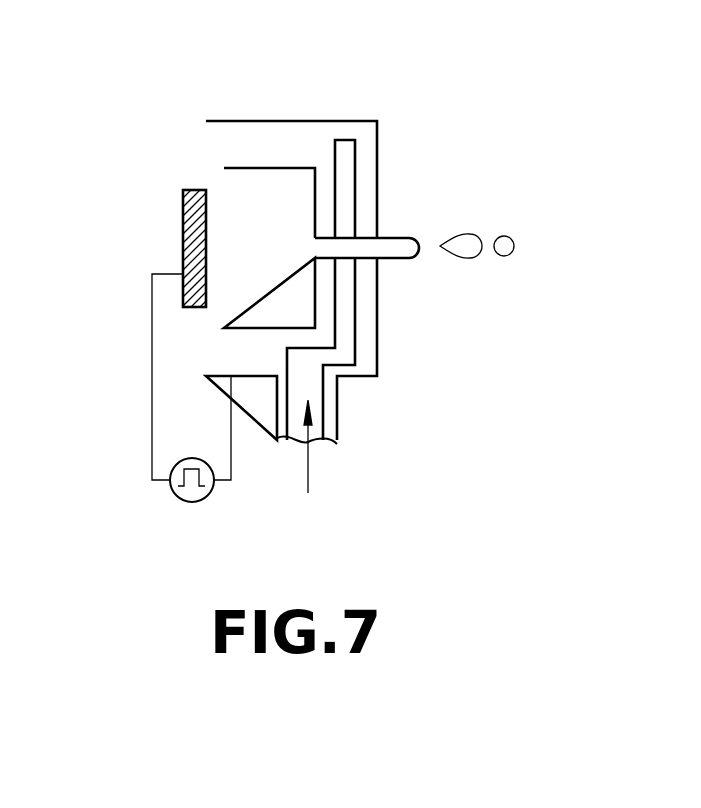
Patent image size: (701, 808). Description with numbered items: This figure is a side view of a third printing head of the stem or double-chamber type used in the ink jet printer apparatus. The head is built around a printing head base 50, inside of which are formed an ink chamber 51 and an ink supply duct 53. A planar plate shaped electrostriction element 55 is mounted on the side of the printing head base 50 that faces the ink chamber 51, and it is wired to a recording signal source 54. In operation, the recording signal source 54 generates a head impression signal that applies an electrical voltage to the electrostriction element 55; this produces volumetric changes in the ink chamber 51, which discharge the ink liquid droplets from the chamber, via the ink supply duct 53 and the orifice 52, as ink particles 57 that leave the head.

The printing head base 50 is at (367, 357).
The ink chamber 51 is at (280, 185).
The orifice 52 is at (387, 228).
The ink supply duct 53 is at (348, 177).
The recording signal source 54 is at (182, 497).
The planar plate shaped electrostriction element 55 is at (192, 213).
The ink particles 57 is at (467, 252).